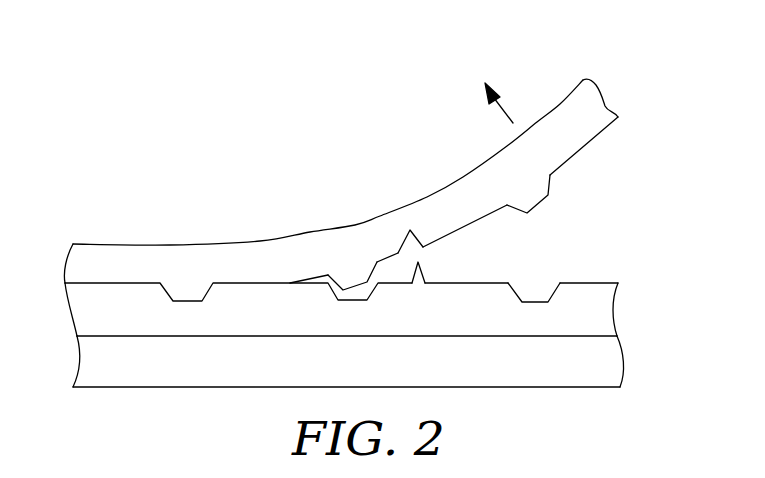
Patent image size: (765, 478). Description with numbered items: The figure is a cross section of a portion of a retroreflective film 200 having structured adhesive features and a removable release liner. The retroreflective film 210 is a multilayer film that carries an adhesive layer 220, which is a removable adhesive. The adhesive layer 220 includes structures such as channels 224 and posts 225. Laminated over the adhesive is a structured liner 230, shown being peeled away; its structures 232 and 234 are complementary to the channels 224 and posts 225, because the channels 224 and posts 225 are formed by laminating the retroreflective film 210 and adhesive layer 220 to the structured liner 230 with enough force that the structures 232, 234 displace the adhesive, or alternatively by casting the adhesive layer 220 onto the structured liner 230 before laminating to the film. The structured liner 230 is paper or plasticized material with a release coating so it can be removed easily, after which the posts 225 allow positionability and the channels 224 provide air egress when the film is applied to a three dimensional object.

The retroreflective film 200 is at (220, 83).
The retroreflective film 210 is at (600, 362).
The adhesive layer 220 is at (600, 305).
The channels 224 is at (535, 292).
The posts 225 is at (424, 277).
The structured liner 230 is at (572, 113).
The structure 232 is at (353, 280).
The structure 234 is at (418, 235).